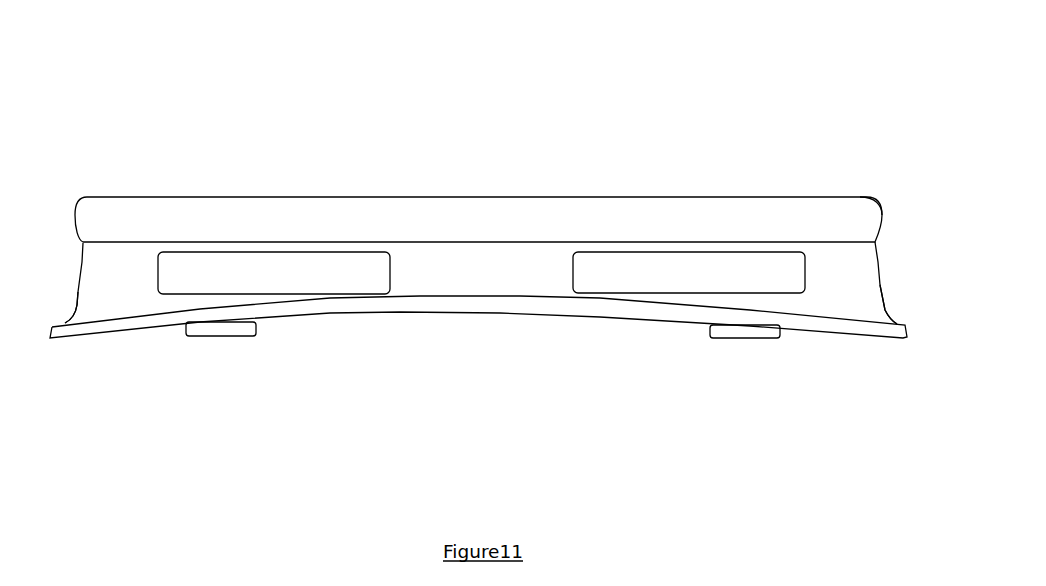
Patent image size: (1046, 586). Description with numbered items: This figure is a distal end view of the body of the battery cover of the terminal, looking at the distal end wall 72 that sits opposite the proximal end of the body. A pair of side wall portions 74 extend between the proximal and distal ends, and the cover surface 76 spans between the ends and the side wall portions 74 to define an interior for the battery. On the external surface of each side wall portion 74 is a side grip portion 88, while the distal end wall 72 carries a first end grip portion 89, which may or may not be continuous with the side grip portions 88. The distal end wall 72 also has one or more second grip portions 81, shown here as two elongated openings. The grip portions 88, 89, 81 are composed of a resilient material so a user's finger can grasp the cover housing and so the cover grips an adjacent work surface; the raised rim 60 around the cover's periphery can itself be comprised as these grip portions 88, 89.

The raised rim 60 is at (478, 277).
The distal end wall 72 is at (530, 340).
The side wall portions 74 is at (78, 288).
The cover surface 76 is at (275, 195).
The second grip portions 81 is at (297, 272).
The side grip portion 88 is at (882, 190).
The first end grip portion 89 is at (498, 213).